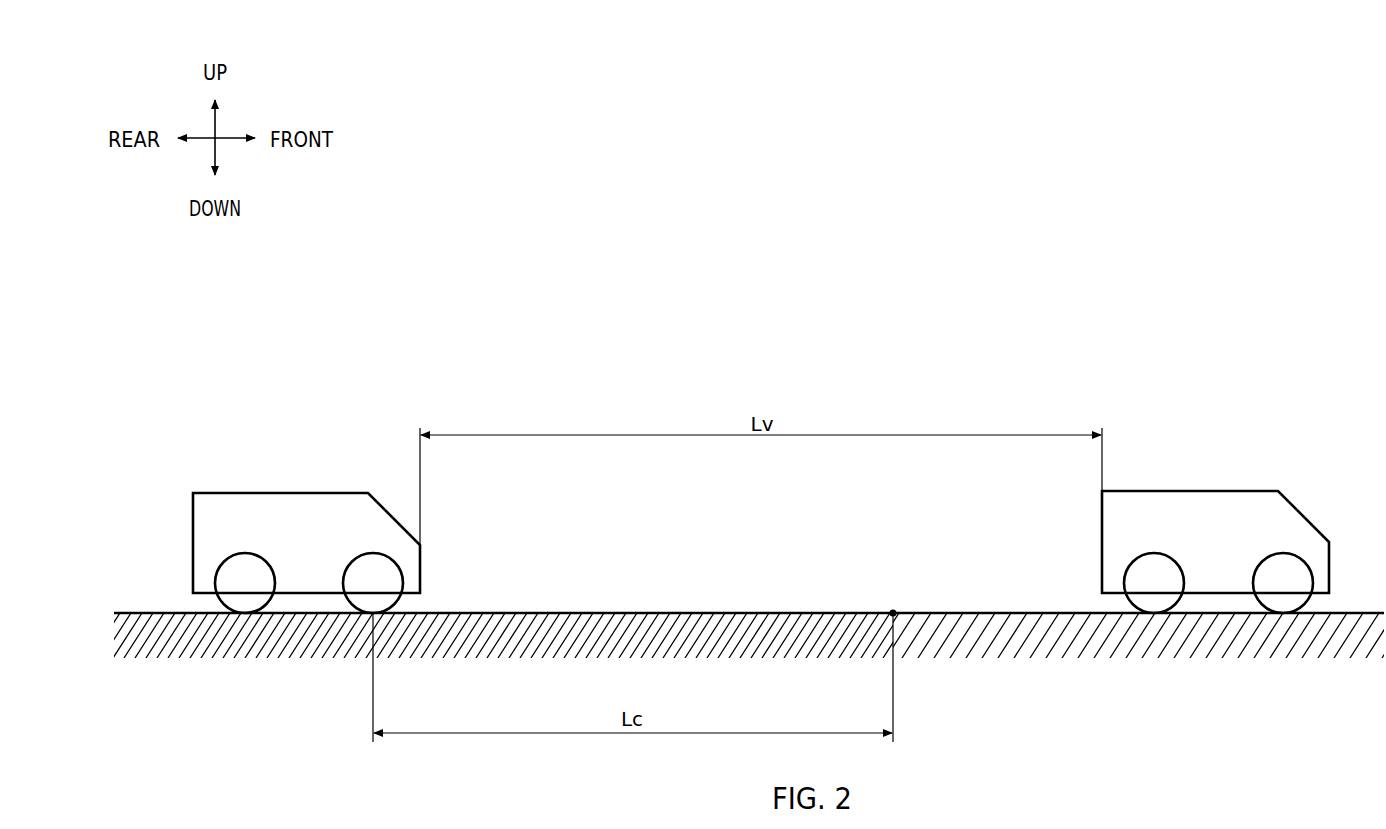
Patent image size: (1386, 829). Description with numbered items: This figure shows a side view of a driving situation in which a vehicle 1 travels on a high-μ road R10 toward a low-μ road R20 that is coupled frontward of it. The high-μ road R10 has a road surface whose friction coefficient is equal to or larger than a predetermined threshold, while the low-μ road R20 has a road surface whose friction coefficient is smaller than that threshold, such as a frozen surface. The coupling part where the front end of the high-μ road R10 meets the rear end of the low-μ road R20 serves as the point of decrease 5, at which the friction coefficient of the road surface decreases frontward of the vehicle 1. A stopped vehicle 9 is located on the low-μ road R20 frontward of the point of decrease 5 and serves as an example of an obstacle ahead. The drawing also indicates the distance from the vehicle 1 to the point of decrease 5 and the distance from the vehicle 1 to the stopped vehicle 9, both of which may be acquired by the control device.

The vehicle 1 is at (280, 503).
The stopped vehicle 9 is at (1188, 503).
The point of decrease 5 is at (893, 609).
The high-μ road R10 is at (272, 648).
The low-μ road R20 is at (1093, 645).